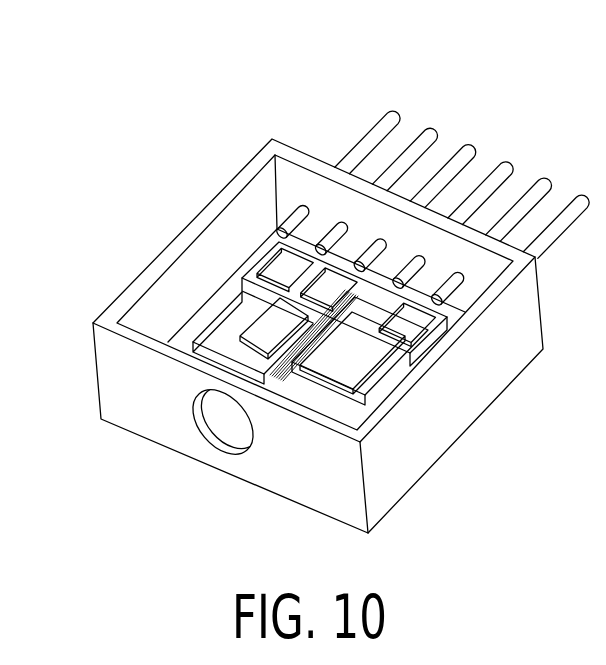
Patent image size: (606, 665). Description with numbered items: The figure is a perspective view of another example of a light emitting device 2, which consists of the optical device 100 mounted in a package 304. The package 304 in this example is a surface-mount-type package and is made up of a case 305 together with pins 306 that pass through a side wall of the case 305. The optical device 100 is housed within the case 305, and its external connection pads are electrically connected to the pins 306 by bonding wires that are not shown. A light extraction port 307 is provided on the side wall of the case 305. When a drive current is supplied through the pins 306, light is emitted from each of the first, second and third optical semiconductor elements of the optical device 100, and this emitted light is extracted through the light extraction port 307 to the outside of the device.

The light emitting device 2 is at (75, 126).
The optical device 100 is at (228, 327).
The package 304 is at (474, 440).
The case 305 is at (233, 191).
The pins 306 is at (381, 133).
The light extraction port 307 is at (215, 436).